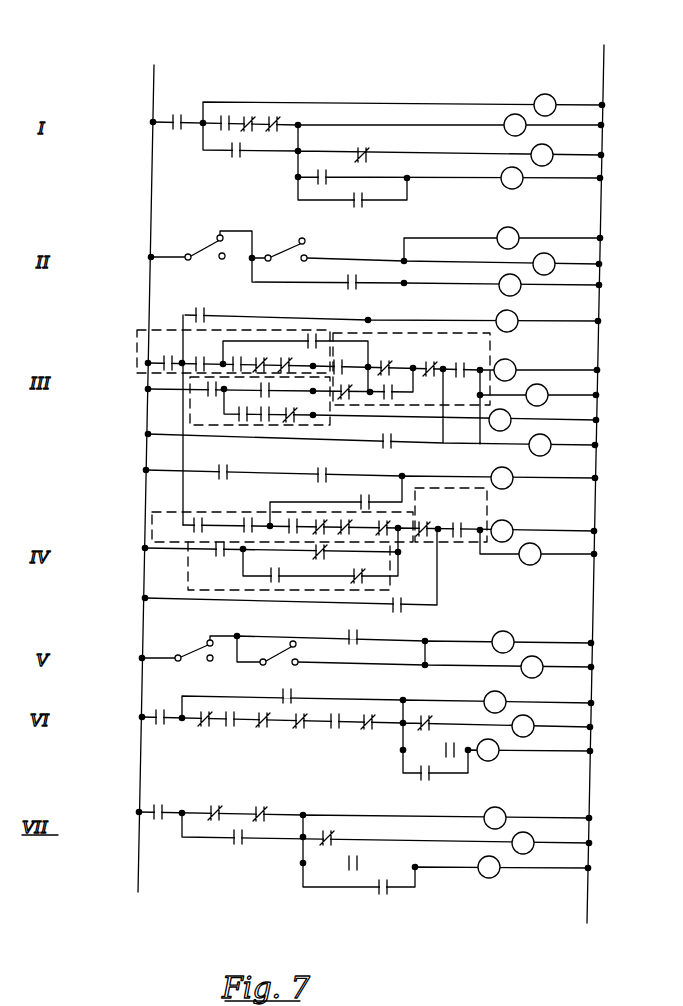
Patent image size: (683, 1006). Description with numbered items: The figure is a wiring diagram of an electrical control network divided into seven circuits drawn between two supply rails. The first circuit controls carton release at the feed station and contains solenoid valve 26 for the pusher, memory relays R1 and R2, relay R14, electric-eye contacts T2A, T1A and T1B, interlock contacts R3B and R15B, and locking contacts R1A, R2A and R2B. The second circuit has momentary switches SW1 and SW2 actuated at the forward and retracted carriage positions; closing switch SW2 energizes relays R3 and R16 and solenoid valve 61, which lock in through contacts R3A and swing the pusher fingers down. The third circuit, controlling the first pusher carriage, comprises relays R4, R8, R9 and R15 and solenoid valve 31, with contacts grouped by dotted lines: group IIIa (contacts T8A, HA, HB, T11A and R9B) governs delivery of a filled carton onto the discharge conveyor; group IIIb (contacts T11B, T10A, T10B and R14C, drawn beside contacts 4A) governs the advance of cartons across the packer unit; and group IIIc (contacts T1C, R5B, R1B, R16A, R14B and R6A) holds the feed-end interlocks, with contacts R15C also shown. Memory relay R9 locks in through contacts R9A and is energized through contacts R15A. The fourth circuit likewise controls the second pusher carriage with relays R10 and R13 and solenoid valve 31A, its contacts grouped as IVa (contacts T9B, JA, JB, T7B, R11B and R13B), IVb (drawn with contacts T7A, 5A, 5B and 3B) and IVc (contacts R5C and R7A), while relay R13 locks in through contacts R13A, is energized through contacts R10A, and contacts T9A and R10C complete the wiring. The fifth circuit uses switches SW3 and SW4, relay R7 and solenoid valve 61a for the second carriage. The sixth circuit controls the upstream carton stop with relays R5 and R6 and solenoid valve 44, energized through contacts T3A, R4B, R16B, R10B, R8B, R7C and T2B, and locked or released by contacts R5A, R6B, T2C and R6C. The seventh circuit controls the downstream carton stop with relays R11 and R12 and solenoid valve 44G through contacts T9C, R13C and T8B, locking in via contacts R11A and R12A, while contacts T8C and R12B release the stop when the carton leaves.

The contacts of electric eye T2 T2A is at (182, 112).
The contacts of relay R3 R3B is at (221, 132).
The contacts of relay R15 R15B is at (251, 116).
The contact of electric eye T1 T1B is at (277, 116).
The contact of relay R1 R1A is at (239, 157).
The contact of electric eye T1 T1A is at (340, 150).
The contacts of relay R2 R2B is at (366, 148).
The contacts of relay R2 R2A is at (357, 206).
The relay R14 is at (545, 96).
The control memory relay R1 is at (506, 118).
The solenoid valve 26 is at (553, 154).
The control memory relay R2 is at (521, 186).
The momentary contact switch SW1 is at (196, 244).
The momentary contact switch SW2 is at (286, 242).
The contacts of relay R3 R3A is at (362, 268).
The relay R3 is at (499, 242).
The solenoid valve 61 is at (554, 258).
The relay R16 is at (501, 281).
The contacts of relay R9 R9A is at (207, 312).
The memory relay R9 is at (518, 317).
The group of control and interlocking contacts IIIa is at (137, 349).
The group of contacts IIIb is at (190, 420).
The group of interlocking contacts IIIc is at (467, 407).
The contacts of electric eye T8 T8A is at (168, 355).
The switch contacts HA is at (201, 355).
The switch contacts HB is at (239, 358).
The contacts of electric eye T11 T11A is at (264, 358).
The contacts of relay R9 R9B is at (292, 358).
The contacts of relay R15 R15A is at (329, 333).
The contacts of electric eye T1 T1C is at (350, 360).
The contacts of relay R5 R5B is at (393, 359).
The contacts of relay R1 R1B is at (435, 359).
The contacts of relay R16 R16A is at (469, 359).
The relay R4 is at (513, 366).
The contacts of electric eye T11 T11B is at (212, 400).
The contact 4A is at (250, 394).
The contacts of relay R14 R14B is at (355, 386).
The contacts of relay R6 R6A is at (397, 386).
The solenoid valve 31 is at (546, 393).
The contacts of electric eye T10 T10A is at (247, 421).
The contacts of electric eye T10 T10B is at (274, 409).
The contacts of relay R14 R14C is at (297, 420).
The relay R15 contact C R15C is at (401, 434).
The relay R8 is at (507, 430).
The relay R15 is at (551, 446).
The group of control and interlocking contacts IVa is at (152, 527).
The group of contacts IVb is at (188, 573).
The group of interlocking contacts IVc is at (487, 495).
The contacts of electric eye T9 T9A is at (233, 465).
The contacts of relay R13 R13A is at (341, 468).
The memory relay R13 is at (511, 476).
The contacts of electric eye T9 T9B is at (196, 514).
The switch contacts JA is at (245, 514).
The switch contacts JB is at (288, 518).
The contacts of electric eye T7 T7B is at (319, 518).
The contacts of relay R10 R10A is at (367, 494).
The contacts of relay R11 R11B is at (348, 536).
The contacts of relay R13 R13B is at (383, 536).
The contacts of relay R5 R5C is at (430, 520).
The contacts of relay R7 R7A is at (468, 521).
The relay R10 is at (511, 527).
The timer T7 contact A T7A is at (218, 559).
The contact 5B is at (322, 558).
The contact 5A is at (265, 571).
The contact 3B is at (360, 584).
The solenoid valve 31A is at (537, 563).
The relay R10 contact C R10C is at (416, 612).
The switch SW3 is at (188, 648).
The switch SW4 is at (271, 653).
The contacts of relay R7 R7C is at (355, 679).
The relay R7 is at (512, 638).
The solenoid 61a is at (543, 665).
The contacts of electric eye T3 T3A is at (160, 709).
The contact of relay R4 R4B is at (211, 712).
The contacts of relay R16 R16B is at (231, 728).
The contacts of relay R10 R10B is at (269, 712).
The contacts of relay R8 R8B is at (299, 731).
The contact of electric eye T2 T2B is at (361, 733).
The contacts of relay R5 R5A is at (293, 690).
The contacts of relay R6 R6B is at (429, 716).
The contacts of electric eye T2 T2C is at (445, 743).
The contacts of relay R6 R6C is at (429, 783).
The relay R5 is at (505, 697).
The solenoid valve 44 is at (534, 724).
The relay R6 is at (492, 761).
The contacts of electric eye T9 T9C is at (161, 805).
The contacts of relay R13 R13C is at (221, 805).
The contacts of electric eye T8 T8B is at (258, 806).
The contacts of relay R11 R11A is at (235, 847).
The contacts of relay R12 R12B is at (347, 832).
The contacts of electric eye T8 T8C is at (365, 857).
The contacts of relay R12 R12A is at (383, 897).
The relay R11 is at (505, 811).
The solenoid valve 44G is at (532, 840).
The relay R12 is at (500, 877).